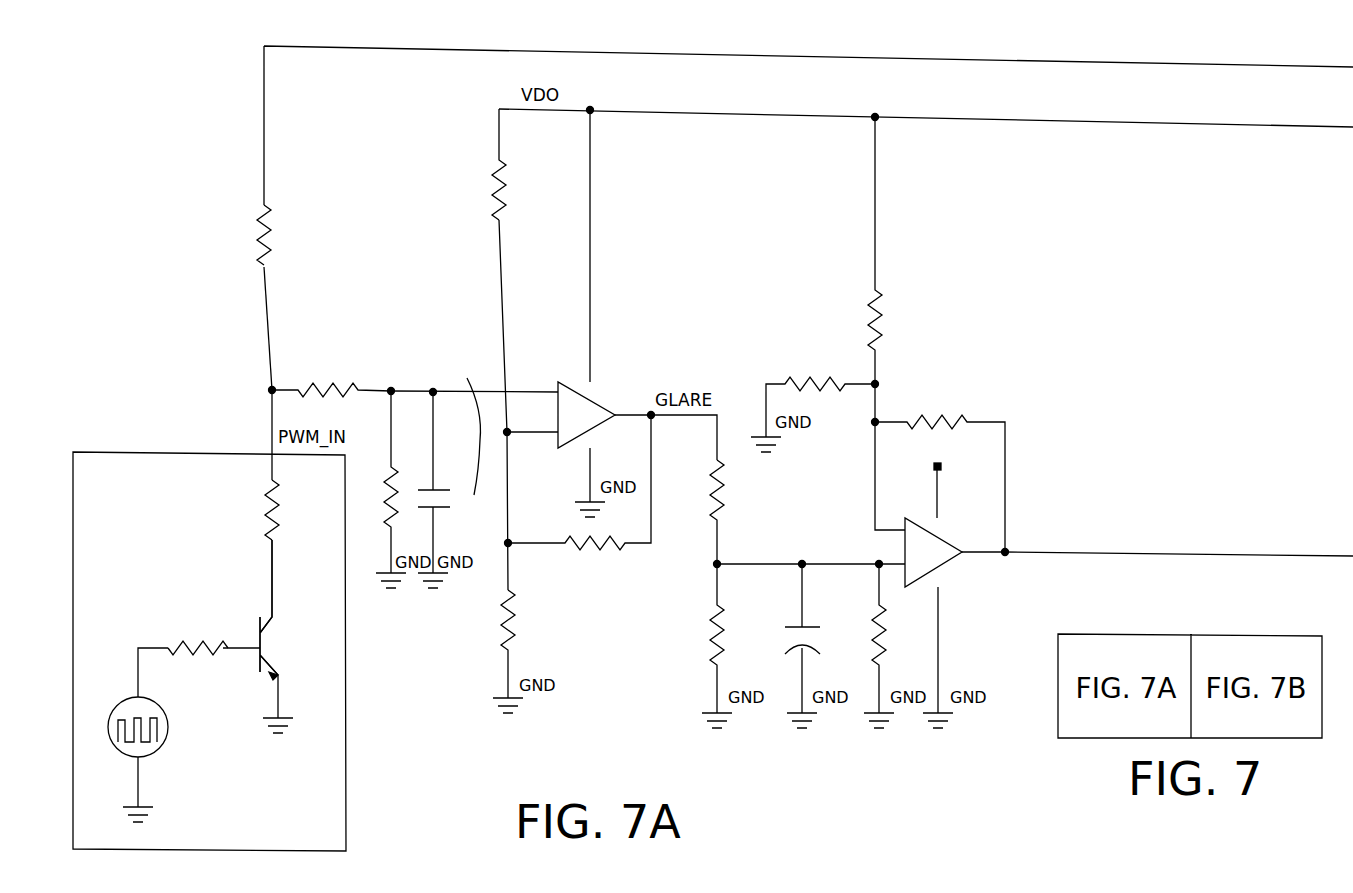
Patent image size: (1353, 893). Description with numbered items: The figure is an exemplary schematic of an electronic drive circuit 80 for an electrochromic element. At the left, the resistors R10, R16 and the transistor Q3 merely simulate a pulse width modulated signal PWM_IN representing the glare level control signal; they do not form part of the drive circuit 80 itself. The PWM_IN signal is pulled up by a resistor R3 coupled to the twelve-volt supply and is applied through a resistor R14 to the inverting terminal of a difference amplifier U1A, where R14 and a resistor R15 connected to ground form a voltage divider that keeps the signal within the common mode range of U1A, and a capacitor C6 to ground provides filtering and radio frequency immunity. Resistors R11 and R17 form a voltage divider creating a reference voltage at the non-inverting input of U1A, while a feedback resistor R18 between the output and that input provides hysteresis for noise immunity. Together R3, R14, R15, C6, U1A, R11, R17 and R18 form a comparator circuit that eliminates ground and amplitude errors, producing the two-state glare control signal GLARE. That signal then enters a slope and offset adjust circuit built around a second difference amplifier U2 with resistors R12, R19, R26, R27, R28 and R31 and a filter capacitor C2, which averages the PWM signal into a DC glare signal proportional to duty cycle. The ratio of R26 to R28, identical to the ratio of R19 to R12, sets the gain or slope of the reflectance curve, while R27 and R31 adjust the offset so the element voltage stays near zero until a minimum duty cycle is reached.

The electronic drive circuit 80 is at (261, 620).
The resistor R3 is at (288, 235).
The resistor R10 is at (294, 510).
The resistor R11 is at (523, 164).
The resistor R12 is at (740, 512).
The resistor R14 is at (331, 367).
The resistor R15 is at (372, 482).
The resistor R16 is at (199, 628).
The resistor R17 is at (529, 644).
The feedback resistor R18 is at (579, 511).
The resistor R19 is at (740, 638).
The resistor R26 is at (940, 460).
The resistor R27 is at (906, 323).
The resistor R28 is at (820, 386).
The resistor R31 is at (907, 638).
The capacitor C2 is at (827, 638).
The capacitor C6 is at (443, 443).
The transistor Q3 is at (285, 637).
The difference amplifier U1A is at (611, 395).
The difference amplifier U2 is at (900, 545).